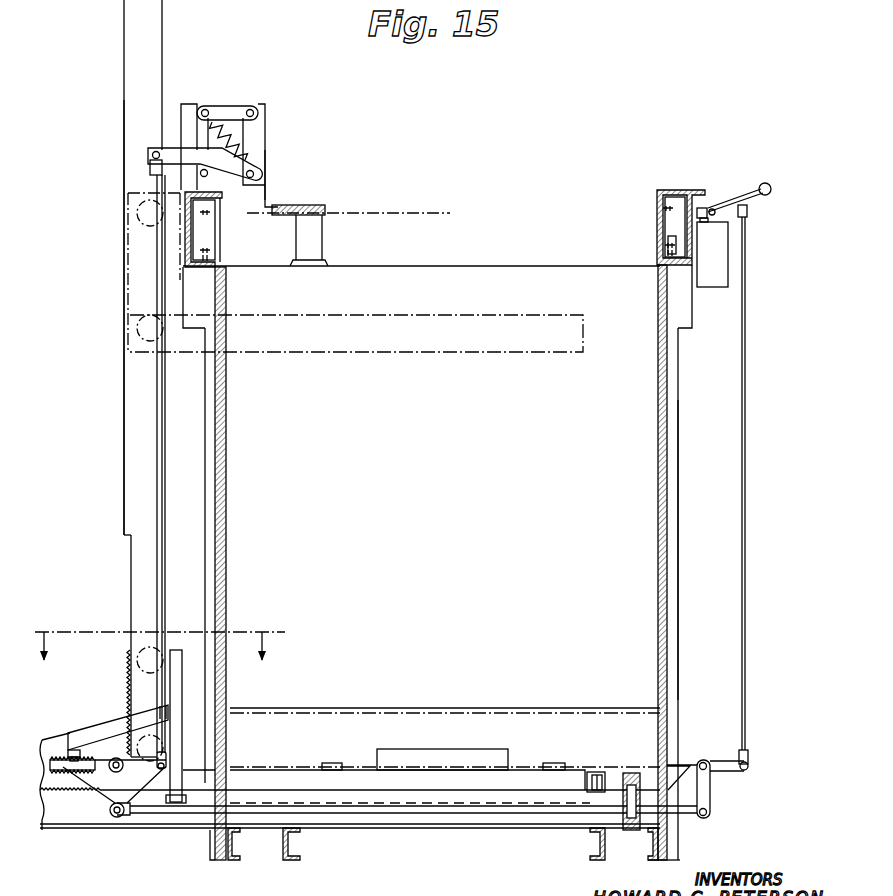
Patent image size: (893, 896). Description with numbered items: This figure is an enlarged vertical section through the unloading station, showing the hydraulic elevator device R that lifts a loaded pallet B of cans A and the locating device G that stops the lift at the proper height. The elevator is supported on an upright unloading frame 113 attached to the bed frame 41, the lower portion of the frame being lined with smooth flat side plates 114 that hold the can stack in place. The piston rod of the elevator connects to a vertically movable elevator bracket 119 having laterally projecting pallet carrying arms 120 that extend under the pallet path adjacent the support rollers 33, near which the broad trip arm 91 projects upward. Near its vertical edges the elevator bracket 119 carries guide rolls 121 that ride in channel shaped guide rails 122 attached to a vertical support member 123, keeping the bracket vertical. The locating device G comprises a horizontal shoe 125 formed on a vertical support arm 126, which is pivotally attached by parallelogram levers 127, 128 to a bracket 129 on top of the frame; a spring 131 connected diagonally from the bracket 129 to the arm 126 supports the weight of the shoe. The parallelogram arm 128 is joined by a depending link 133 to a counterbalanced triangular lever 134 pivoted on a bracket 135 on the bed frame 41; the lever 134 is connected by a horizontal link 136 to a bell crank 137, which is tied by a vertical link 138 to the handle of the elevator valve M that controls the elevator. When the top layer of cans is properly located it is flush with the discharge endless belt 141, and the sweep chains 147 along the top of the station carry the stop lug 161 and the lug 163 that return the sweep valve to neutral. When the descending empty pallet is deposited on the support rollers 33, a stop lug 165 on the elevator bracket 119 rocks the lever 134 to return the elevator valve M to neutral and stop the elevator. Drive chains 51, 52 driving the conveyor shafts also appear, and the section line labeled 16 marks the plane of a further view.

The hydraulic elevator device R is at (121, 84).
The vertical support member 123 is at (129, 394).
The channel shaped guide rails 122 is at (141, 564).
The bracket 135 is at (107, 680).
The depending link 133 is at (156, 441).
The bracket 129 is at (187, 110).
The support arm 126 is at (262, 146).
The parallelogram lever 127 is at (224, 110).
The spring 131 is at (232, 145).
The parallelogram lever 128 is at (232, 170).
The locating device G is at (284, 182).
The locating shoe 125 is at (312, 206).
The cans A is at (322, 240).
The elevator bracket 119 is at (182, 290).
The sweep chains 147 is at (235, 252).
The guide rolls 121 is at (133, 215).
The endless belt 141 is at (463, 264).
The pallet B is at (622, 320).
The pallet carrying arms 120 is at (382, 353).
The support rollers 33 is at (332, 762).
The trip arm 91 is at (440, 752).
The side plates 114 is at (533, 278).
The unloading frame 113 is at (684, 505).
The bed frame 41 is at (65, 820).
The lug 163 is at (676, 206).
The stop lug 161 is at (670, 241).
The elevator valve M is at (716, 276).
The vertical link 138 is at (747, 436).
The bell crank 137 is at (735, 767).
The horizontal link 136 is at (370, 814).
The drive chain 51 is at (596, 772).
The drive chain 52 is at (632, 773).
The stop lug 165 is at (93, 737).
The counterbalanced triangular lever 134 is at (106, 800).
The section line 16- 16 is at (159, 630).